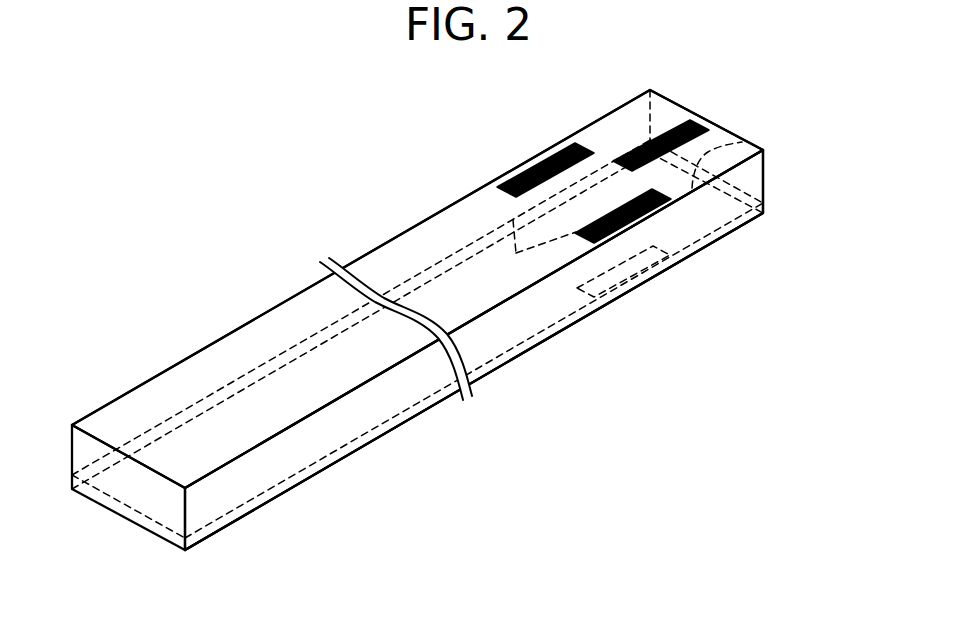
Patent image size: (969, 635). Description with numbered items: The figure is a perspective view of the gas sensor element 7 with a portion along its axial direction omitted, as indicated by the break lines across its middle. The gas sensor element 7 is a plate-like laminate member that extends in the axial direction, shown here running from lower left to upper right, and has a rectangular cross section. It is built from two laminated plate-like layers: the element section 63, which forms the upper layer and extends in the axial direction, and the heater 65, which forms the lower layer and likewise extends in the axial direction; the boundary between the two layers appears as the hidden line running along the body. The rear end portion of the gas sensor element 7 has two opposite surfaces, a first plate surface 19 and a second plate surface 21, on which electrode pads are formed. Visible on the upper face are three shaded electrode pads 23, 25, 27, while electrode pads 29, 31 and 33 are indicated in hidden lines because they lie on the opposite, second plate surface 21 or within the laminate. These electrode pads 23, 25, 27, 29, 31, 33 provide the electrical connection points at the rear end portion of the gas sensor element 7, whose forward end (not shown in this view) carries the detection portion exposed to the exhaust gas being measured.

The gas sensor element 7 is at (327, 153).
The first plate surface 19 is at (435, 230).
The second plate surface 21 is at (546, 340).
The electrode pad 23 is at (547, 162).
The electrode pad 25 is at (693, 130).
The electrode pad 27 is at (660, 203).
The electrode pad 29 is at (513, 220).
The electrode pad 31 is at (748, 142).
The electrode pad 33 is at (648, 273).
The element section 63 is at (157, 402).
The heater 65 is at (133, 513).